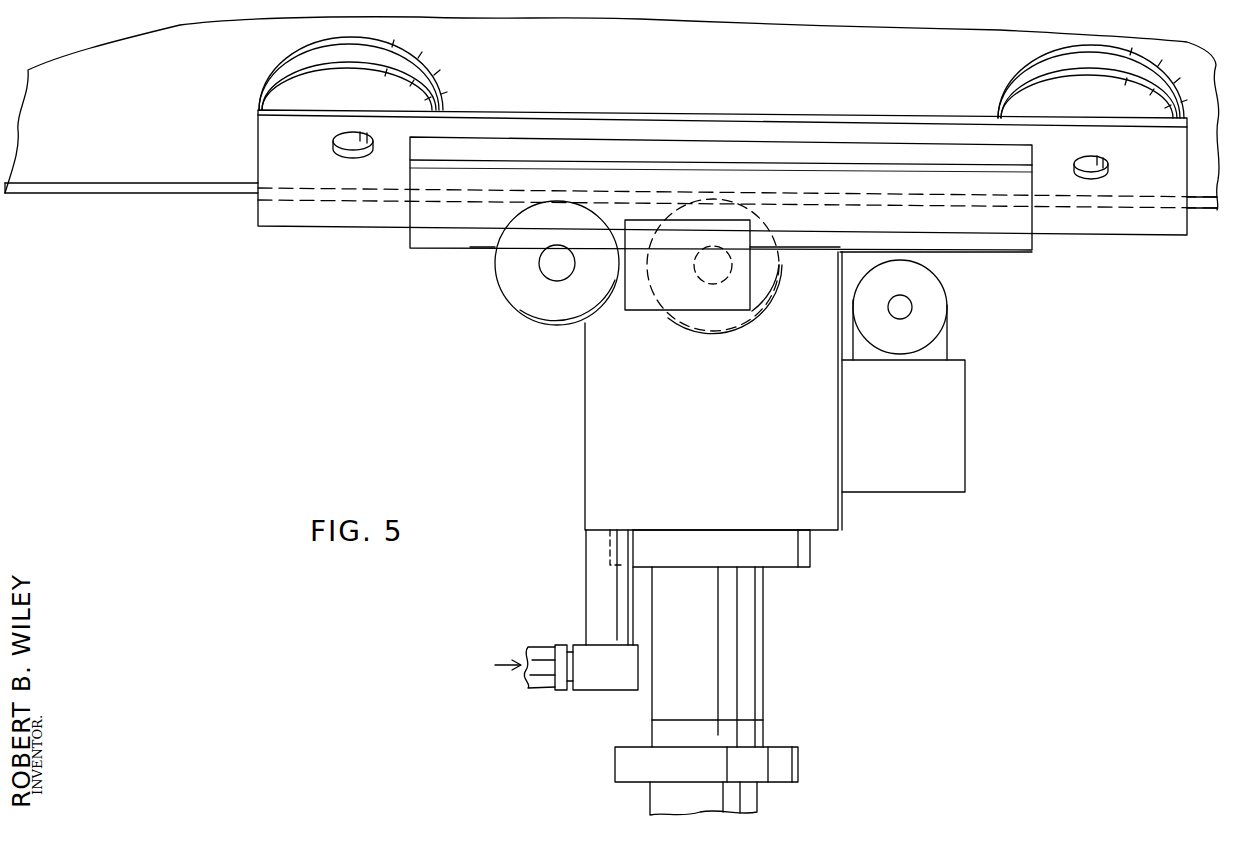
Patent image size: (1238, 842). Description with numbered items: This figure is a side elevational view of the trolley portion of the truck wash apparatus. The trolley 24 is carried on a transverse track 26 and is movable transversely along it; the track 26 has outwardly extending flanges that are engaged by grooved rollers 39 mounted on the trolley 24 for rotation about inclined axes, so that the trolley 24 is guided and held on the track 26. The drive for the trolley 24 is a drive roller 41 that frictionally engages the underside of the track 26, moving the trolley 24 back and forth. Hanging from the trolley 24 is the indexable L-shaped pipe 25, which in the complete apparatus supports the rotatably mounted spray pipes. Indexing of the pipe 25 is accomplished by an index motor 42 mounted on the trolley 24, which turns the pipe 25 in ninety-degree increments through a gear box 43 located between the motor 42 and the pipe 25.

The trolley 24 is at (718, 112).
The indexable L-shaped pipe 25 is at (755, 729).
The transverse track 26 is at (138, 192).
The grooved rollers 39 is at (407, 60).
The drive roller 41 is at (760, 300).
The index motor 42 is at (945, 310).
The gear box 43 is at (820, 432).